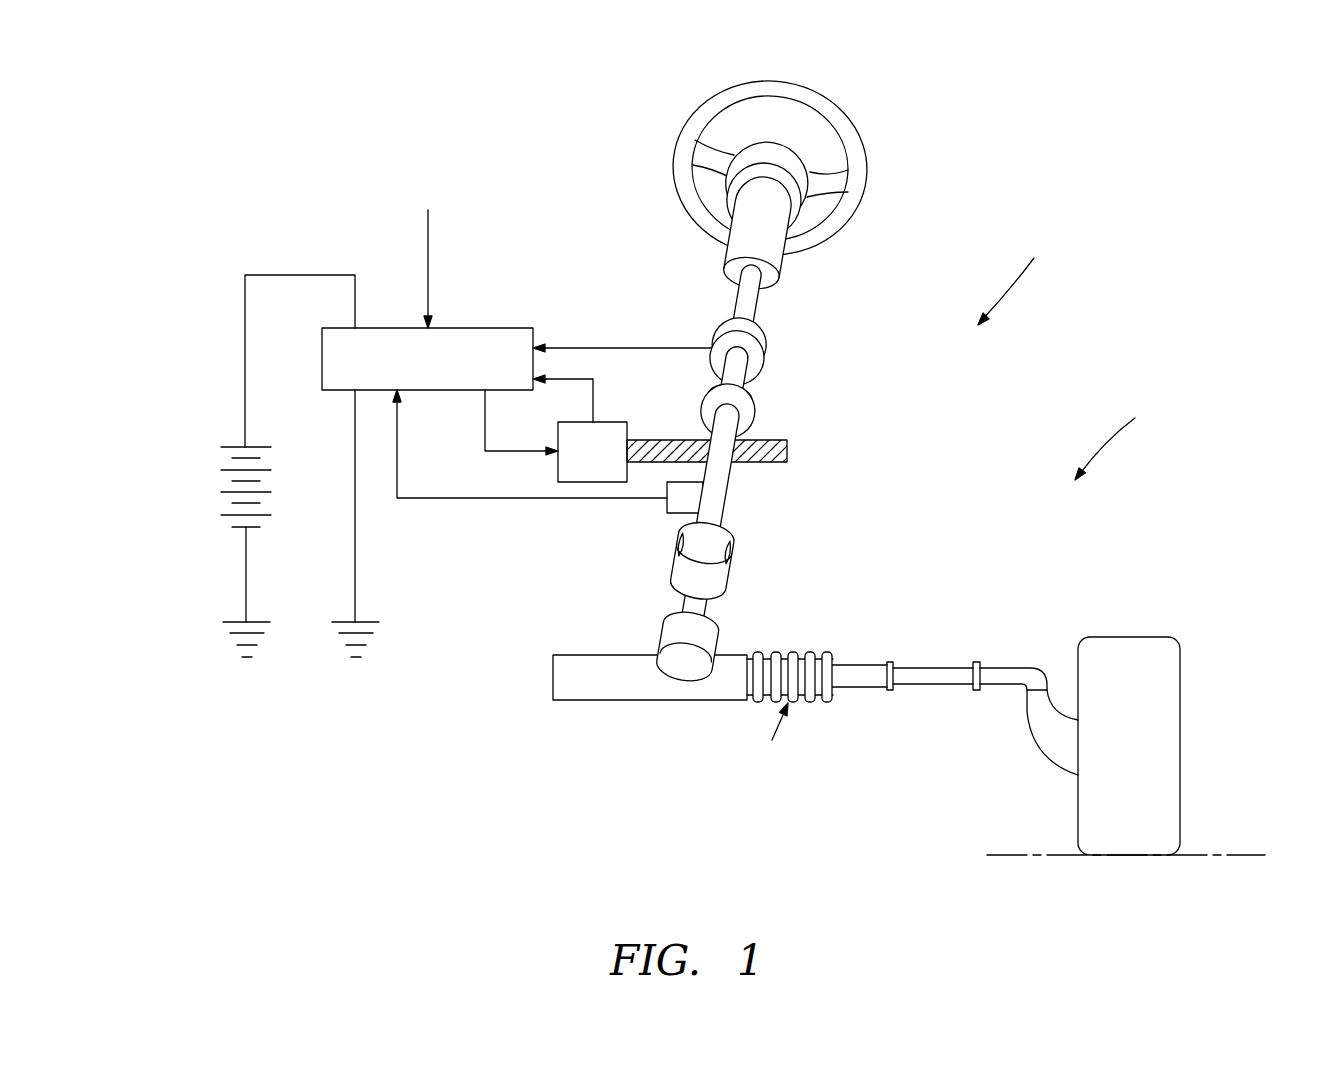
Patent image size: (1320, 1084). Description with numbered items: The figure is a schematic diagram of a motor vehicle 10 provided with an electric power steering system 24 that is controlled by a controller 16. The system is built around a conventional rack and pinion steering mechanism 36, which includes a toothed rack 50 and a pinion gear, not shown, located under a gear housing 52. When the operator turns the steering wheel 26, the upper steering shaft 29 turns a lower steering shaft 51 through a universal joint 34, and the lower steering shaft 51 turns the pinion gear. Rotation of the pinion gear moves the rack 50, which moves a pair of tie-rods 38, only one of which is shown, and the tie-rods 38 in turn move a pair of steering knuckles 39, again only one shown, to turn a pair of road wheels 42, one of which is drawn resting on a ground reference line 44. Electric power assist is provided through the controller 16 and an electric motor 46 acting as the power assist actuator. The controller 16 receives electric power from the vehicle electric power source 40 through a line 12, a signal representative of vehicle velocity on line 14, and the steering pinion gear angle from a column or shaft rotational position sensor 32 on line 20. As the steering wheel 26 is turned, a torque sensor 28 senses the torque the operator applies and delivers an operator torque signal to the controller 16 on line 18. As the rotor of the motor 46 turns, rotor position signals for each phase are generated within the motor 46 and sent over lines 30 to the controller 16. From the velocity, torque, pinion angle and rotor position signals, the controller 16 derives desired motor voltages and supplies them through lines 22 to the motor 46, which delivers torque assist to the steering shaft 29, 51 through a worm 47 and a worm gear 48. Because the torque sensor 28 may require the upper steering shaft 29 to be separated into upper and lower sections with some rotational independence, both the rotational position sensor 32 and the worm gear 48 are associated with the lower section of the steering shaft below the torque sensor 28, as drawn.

The motor vehicle 10 is at (1122, 441).
The line 12 is at (288, 273).
The line 14 is at (428, 237).
The controller 16 is at (500, 326).
The line 18 is at (632, 348).
The line 20 is at (427, 500).
The lines 22 is at (483, 429).
The electric power steering system 24 is at (1017, 275).
The steering wheel 26 is at (840, 105).
The torque sensor 28 is at (768, 358).
The upper steering shaft 29 is at (757, 291).
The lines 30 is at (588, 396).
The rotational position sensor 32 is at (667, 510).
The universal joint 34 is at (732, 553).
The rack and pinion steering mechanism 36 is at (772, 740).
The tie-rod 38 is at (912, 680).
The steering knuckle 39 is at (1053, 755).
The vehicle electric power source 40 is at (228, 446).
The road wheel 42 is at (1137, 642).
The ground line 44 is at (1062, 858).
The electric motor 46 is at (617, 428).
The worm 47 is at (787, 453).
The worm gear 48 is at (748, 414).
The toothed rack 50 is at (573, 692).
The lower steering shaft 51 is at (707, 610).
The gear housing 52 is at (673, 630).